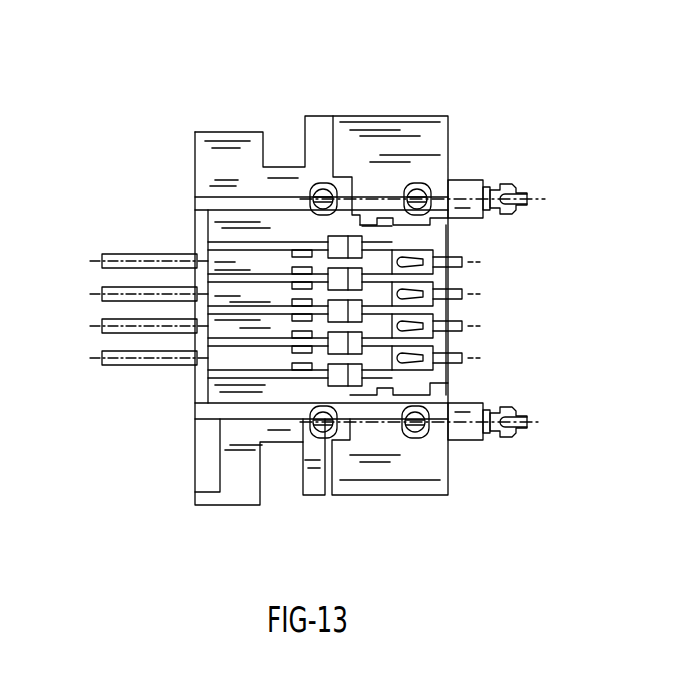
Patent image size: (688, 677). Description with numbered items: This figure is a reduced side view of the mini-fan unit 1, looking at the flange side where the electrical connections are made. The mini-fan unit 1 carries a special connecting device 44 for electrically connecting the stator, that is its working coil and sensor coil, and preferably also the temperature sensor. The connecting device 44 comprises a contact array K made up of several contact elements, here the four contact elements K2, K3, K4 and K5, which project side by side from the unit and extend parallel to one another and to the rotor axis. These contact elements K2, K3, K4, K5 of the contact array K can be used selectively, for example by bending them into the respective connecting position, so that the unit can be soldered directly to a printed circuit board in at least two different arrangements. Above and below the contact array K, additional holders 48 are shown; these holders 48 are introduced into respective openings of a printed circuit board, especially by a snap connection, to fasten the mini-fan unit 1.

The mini-fan unit 1 is at (463, 128).
The connecting device 44 is at (458, 286).
The holders 48 is at (470, 184).
The contact array K is at (150, 245).
The contact element K2 is at (129, 359).
The contact element K3 is at (129, 327).
The contact element K4 is at (129, 295).
The contact element K5 is at (129, 262).